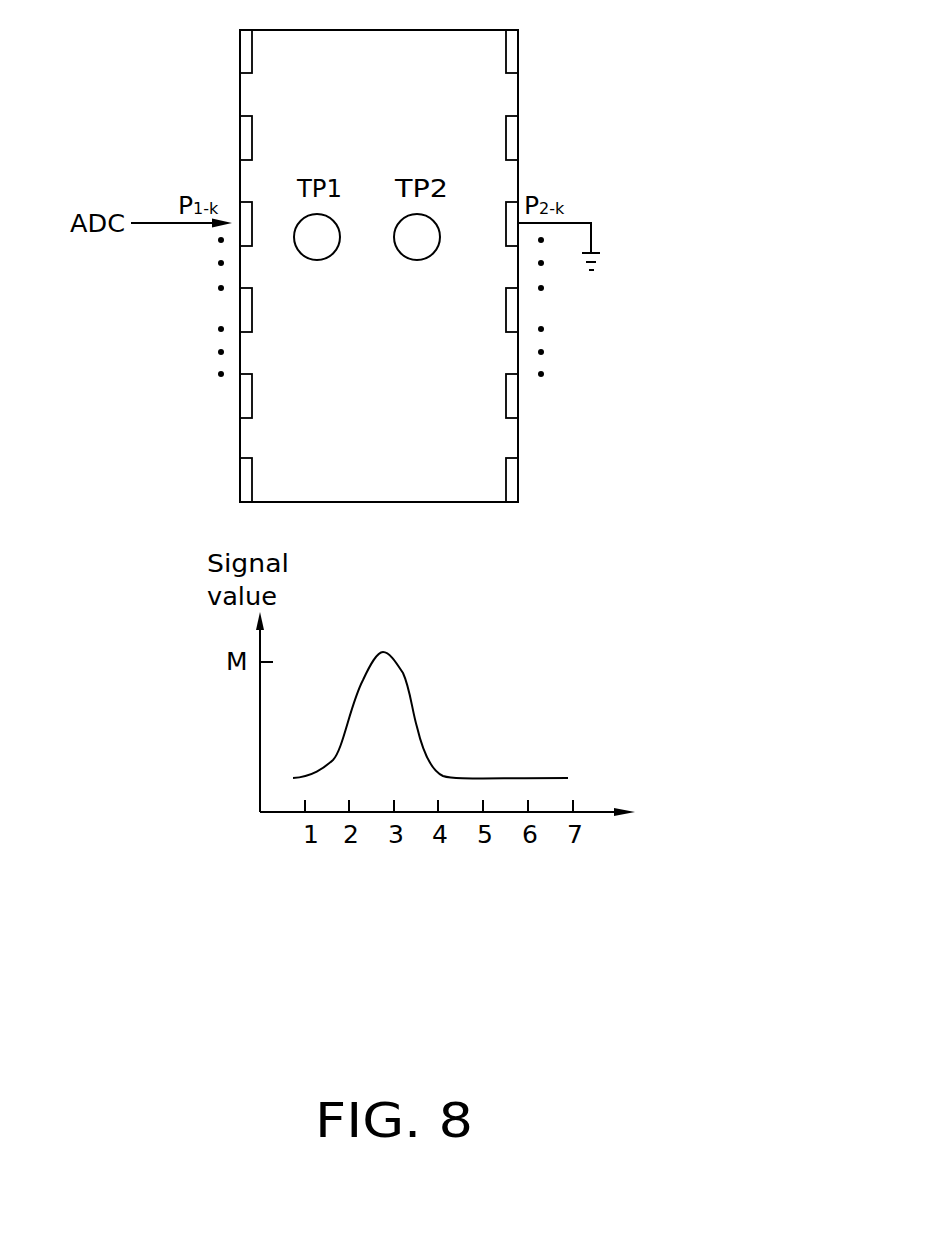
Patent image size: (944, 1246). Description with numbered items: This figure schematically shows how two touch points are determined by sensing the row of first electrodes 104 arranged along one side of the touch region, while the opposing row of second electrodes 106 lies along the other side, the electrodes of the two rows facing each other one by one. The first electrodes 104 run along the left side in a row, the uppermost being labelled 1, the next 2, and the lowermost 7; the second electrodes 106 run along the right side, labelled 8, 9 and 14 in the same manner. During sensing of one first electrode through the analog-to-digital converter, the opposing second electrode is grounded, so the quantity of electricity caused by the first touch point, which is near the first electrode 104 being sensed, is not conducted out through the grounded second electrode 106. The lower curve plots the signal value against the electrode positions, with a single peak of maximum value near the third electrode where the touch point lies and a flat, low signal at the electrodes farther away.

The pin 1 is at (231, 48).
The pin 2 is at (231, 136).
The pin 7 is at (232, 480).
The pin 8 is at (526, 48).
The pin 9 is at (526, 136).
The pin 14 is at (531, 475).
The first electrodes 104 is at (240, 150).
The second electrodes 106 is at (518, 152).